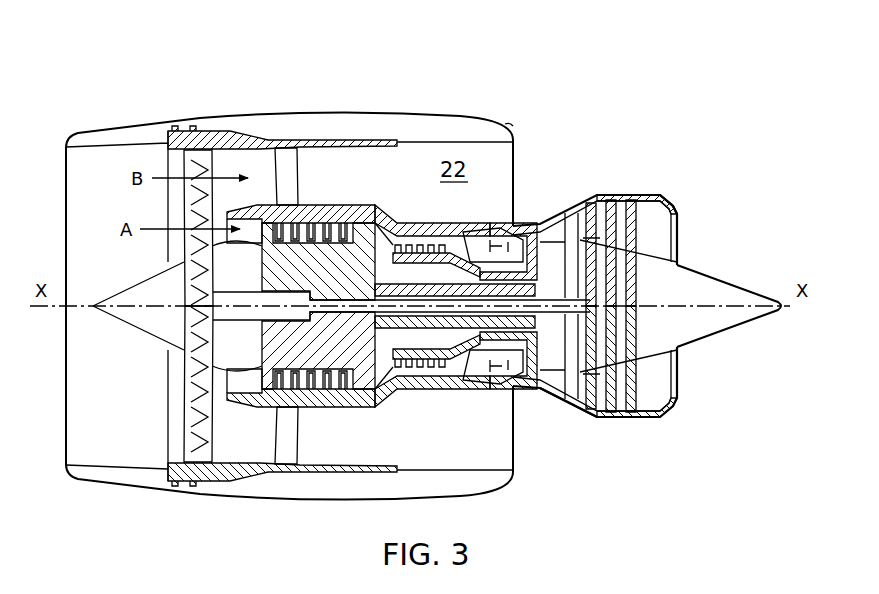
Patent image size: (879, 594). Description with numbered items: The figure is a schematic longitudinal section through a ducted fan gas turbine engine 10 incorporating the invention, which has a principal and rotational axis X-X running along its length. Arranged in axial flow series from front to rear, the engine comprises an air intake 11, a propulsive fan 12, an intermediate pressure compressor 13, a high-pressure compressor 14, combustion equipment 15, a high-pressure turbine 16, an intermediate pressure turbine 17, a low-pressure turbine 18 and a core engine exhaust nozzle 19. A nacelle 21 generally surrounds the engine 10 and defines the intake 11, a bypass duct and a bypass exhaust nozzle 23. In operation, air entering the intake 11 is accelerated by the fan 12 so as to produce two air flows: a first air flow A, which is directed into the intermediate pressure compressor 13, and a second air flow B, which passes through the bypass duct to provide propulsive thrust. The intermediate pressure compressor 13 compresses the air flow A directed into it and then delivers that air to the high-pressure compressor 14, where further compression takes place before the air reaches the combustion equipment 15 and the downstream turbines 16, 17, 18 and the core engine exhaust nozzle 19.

The ducted fan gas turbine engine 10 is at (110, 83).
The air intake 11 is at (112, 144).
The propulsive fan 12 is at (192, 425).
The intermediate pressure compressor 13 is at (318, 378).
The high-pressure compressor 14 is at (432, 228).
The combustion equipment 15 is at (483, 380).
The high-pressure turbine 16 is at (527, 390).
The intermediate pressure turbine 17 is at (567, 217).
The low-pressure turbine 18 is at (577, 408).
The core engine exhaust nozzle 19 is at (668, 200).
The nacelle 21 is at (330, 118).
The bypass exhaust nozzle 23 is at (510, 128).